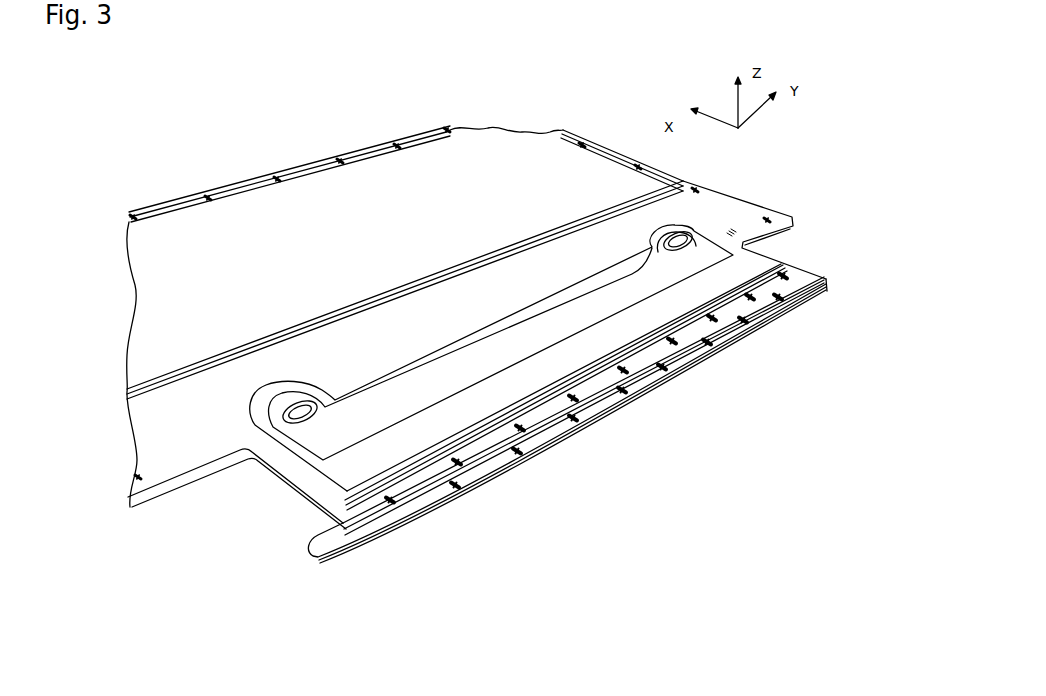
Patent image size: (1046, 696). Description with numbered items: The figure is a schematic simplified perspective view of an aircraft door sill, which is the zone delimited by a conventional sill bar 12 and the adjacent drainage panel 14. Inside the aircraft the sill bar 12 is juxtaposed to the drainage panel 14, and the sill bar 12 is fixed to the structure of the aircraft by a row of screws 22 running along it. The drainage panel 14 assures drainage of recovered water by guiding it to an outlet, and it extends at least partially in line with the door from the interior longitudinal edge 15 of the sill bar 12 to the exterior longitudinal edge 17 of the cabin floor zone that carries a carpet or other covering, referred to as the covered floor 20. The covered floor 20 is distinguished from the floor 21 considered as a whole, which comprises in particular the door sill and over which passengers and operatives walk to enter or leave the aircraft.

The sill bar 12 is at (428, 499).
The drainage panel 14 is at (496, 394).
The interior longitudinal edge 15 is at (548, 407).
The exterior longitudinal edge 17 is at (177, 382).
The covered floor 20 is at (295, 193).
The floor 21 is at (292, 463).
The screws 22 is at (700, 340).